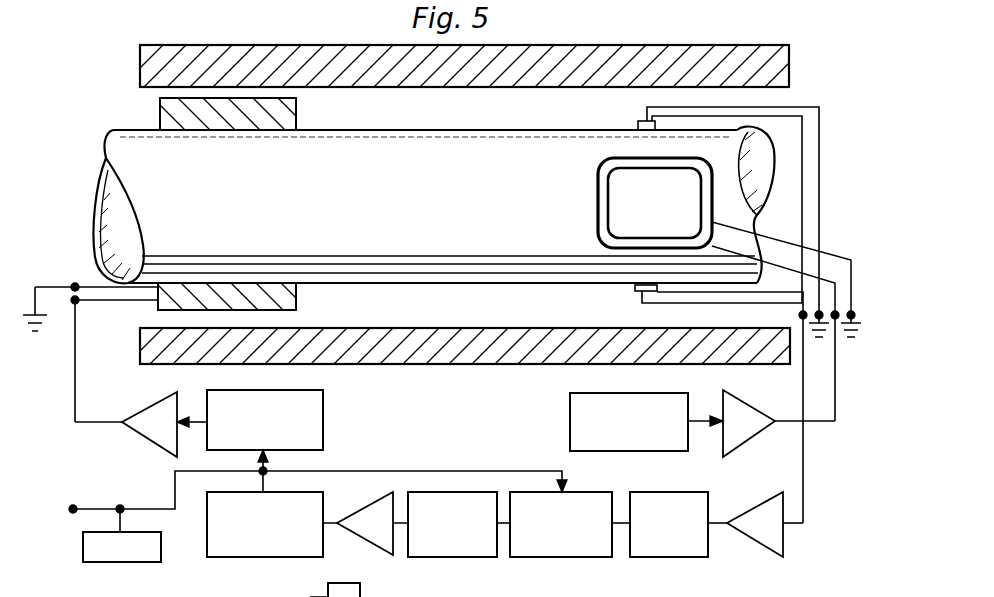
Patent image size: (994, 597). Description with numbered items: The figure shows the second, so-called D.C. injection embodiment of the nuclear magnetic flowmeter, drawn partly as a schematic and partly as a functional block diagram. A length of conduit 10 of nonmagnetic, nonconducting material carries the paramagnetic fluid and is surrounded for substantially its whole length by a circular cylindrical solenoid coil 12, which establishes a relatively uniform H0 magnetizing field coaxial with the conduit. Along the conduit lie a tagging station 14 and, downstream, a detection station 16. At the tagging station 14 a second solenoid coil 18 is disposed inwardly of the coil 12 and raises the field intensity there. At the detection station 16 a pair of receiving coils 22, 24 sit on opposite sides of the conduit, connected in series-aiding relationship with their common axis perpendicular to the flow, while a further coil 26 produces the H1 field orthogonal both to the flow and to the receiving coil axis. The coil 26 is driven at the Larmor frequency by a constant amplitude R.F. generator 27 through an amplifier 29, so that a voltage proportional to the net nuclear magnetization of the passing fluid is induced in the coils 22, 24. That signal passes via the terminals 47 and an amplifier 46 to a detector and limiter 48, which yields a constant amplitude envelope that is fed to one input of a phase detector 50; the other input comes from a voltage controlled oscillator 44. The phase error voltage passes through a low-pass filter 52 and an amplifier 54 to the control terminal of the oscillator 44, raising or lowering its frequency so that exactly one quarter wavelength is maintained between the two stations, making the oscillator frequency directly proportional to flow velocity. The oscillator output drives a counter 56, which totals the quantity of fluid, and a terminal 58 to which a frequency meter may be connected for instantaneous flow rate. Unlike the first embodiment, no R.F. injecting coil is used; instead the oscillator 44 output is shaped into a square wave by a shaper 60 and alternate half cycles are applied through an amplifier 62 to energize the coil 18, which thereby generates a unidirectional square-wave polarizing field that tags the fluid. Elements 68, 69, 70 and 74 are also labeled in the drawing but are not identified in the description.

The conduit 10 is at (100, 148).
The solenoid coil 12 is at (325, 45).
The tagging station 14 is at (280, 203).
The detection station 16 is at (668, 209).
The second solenoid coil 18 is at (160, 115).
The receiving coil 22 is at (638, 122).
The receiving coil 24 is at (636, 291).
The coil 26 is at (598, 202).
The R.F. generator 27 is at (624, 440).
The amplifier 29 is at (745, 440).
The voltage controlled oscillator 44 is at (222, 545).
The amplifier 46 is at (762, 505).
The terminals 47 is at (808, 333).
The detector and limiter 48 is at (708, 550).
The phase detector 50 is at (535, 545).
The low-pass filter 52 is at (437, 550).
The amplifier 54 is at (378, 540).
The counter 56 is at (95, 562).
The terminal 58 is at (73, 509).
The shaper 60 is at (323, 418).
The amplifier 62 is at (155, 445).
The circuit element 68 is at (605, 592).
The circuit element 69 is at (306, 596).
The circuit element 70 is at (486, 596).
The circuit element 74 is at (696, 592).